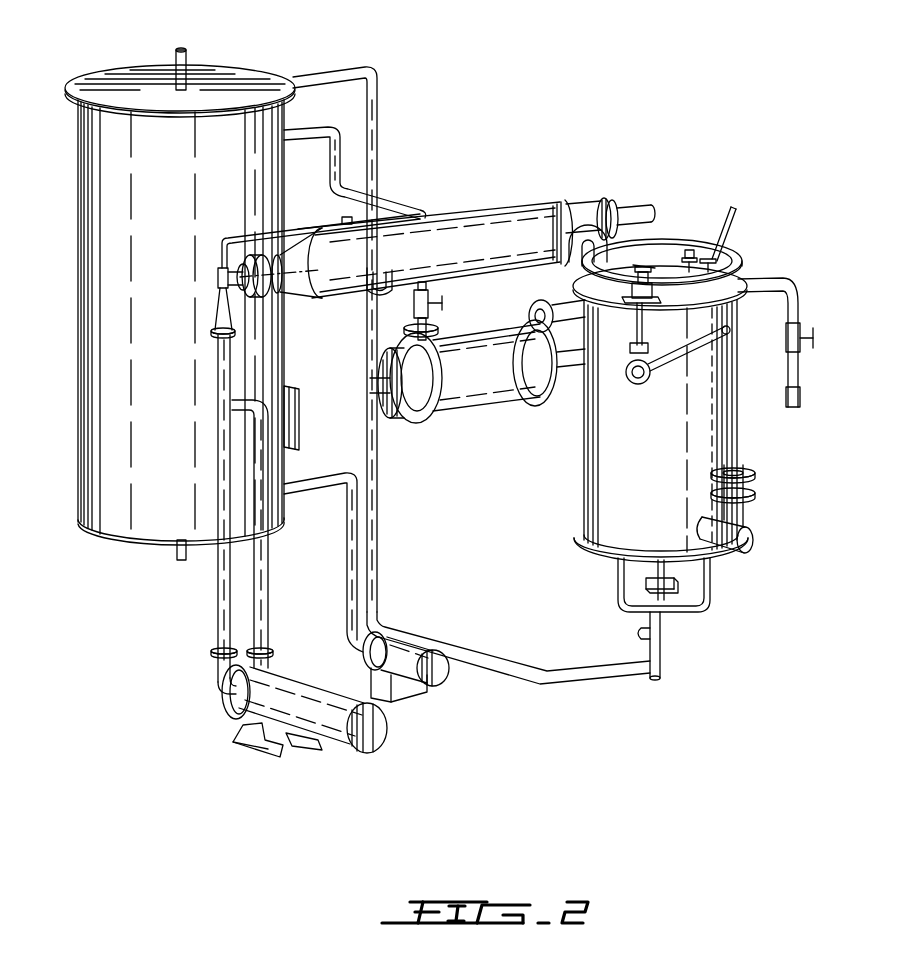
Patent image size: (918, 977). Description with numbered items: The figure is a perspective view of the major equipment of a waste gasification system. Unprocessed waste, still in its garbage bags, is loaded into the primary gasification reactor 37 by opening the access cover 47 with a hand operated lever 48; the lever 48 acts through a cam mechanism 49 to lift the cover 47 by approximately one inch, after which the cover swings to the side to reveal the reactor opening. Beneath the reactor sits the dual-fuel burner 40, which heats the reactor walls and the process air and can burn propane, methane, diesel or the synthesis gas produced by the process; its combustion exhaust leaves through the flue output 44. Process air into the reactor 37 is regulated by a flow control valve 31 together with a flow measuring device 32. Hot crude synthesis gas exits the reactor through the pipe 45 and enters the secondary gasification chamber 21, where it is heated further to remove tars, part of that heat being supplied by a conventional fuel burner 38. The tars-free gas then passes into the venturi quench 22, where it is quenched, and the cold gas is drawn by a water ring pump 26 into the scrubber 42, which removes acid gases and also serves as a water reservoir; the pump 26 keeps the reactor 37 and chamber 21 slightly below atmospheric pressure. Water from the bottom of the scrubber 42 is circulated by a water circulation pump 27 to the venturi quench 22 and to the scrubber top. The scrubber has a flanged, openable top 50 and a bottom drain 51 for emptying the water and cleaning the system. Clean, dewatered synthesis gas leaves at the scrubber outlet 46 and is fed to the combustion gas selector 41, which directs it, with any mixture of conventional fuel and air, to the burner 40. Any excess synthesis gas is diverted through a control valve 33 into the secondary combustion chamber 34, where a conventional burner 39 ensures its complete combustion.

The secondary gasification chamber 21 is at (493, 222).
The venturi quench 22 is at (218, 312).
The water ring pump 26 is at (280, 706).
The water circulation pump 27 is at (440, 678).
The flow control valve 31 is at (800, 332).
The flow measuring device 32 is at (805, 395).
The control valve 33 is at (425, 285).
The secondary combustion chamber 34 is at (493, 377).
The primary gasification reactor 37 is at (710, 520).
The conventional fuel burner 38 is at (644, 213).
The conventional burner 39 is at (385, 415).
The dual-fuel burner 40 is at (736, 556).
The combustion gas selector 41 is at (664, 673).
The scrubber 42 is at (108, 223).
The flue output 44 is at (568, 248).
The pipe 45 is at (640, 266).
The scrubber outlet 46 is at (306, 70).
The access cover 47 is at (738, 252).
The hand operated lever 48 is at (683, 354).
The cam mechanism 49 is at (655, 280).
The top 50 is at (105, 88).
The drain 51 is at (178, 548).